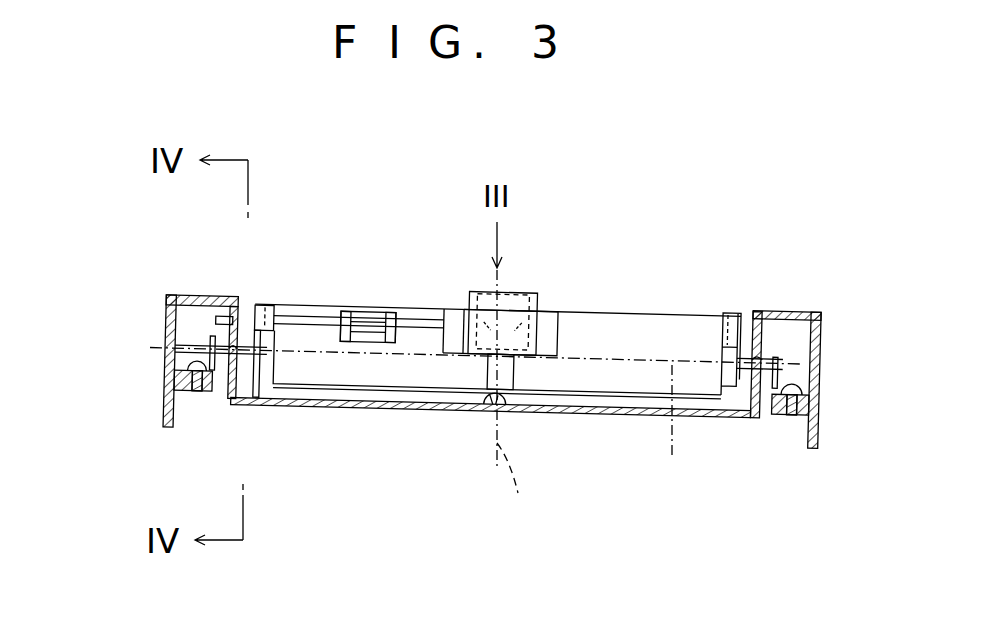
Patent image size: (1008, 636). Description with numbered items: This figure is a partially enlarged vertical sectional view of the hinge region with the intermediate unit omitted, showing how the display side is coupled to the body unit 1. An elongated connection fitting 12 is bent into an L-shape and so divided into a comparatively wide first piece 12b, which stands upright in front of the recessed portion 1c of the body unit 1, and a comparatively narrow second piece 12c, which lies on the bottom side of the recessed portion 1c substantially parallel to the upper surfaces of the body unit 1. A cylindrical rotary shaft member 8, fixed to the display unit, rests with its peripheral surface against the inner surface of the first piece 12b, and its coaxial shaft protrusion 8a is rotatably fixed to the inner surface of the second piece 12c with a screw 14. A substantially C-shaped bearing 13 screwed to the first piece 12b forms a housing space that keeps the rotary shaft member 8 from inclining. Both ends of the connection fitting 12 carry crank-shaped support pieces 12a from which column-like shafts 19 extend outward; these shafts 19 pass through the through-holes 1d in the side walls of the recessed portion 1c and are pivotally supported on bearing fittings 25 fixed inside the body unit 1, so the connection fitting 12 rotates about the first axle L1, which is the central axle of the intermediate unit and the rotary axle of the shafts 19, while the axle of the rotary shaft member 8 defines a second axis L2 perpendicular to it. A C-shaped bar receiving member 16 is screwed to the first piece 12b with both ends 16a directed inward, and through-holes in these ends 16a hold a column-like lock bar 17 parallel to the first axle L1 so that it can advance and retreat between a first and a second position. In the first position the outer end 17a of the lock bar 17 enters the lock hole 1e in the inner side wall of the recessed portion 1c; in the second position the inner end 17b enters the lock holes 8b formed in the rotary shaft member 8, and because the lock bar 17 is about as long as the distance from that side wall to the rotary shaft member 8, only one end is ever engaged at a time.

The body unit 1 is at (178, 296).
The recessed portion 1c is at (246, 305).
The through-holes 1d is at (770, 330).
The lock hole 1e is at (205, 297).
The rotary shaft member 8 is at (553, 312).
The shaft protrusion 8a is at (514, 362).
The lock holes 8b is at (486, 300).
The connection fitting 12 is at (616, 380).
The support pieces 12a is at (266, 400).
The first piece 12b is at (645, 330).
The second piece 12c is at (375, 406).
The bearing 13 is at (557, 312).
The screw 14 is at (490, 406).
The bar receiving member 16 is at (360, 310).
The ends of bar receiving member 16a is at (332, 309).
The lock bar 17 is at (300, 312).
The outer end of lock bar 17a is at (230, 318).
The inner end of lock bar 17b is at (452, 312).
The shafts 19 is at (240, 393).
The bearing fittings 25 is at (200, 345).
The first axle L1 is at (674, 425).
The axis L2 is at (522, 487).